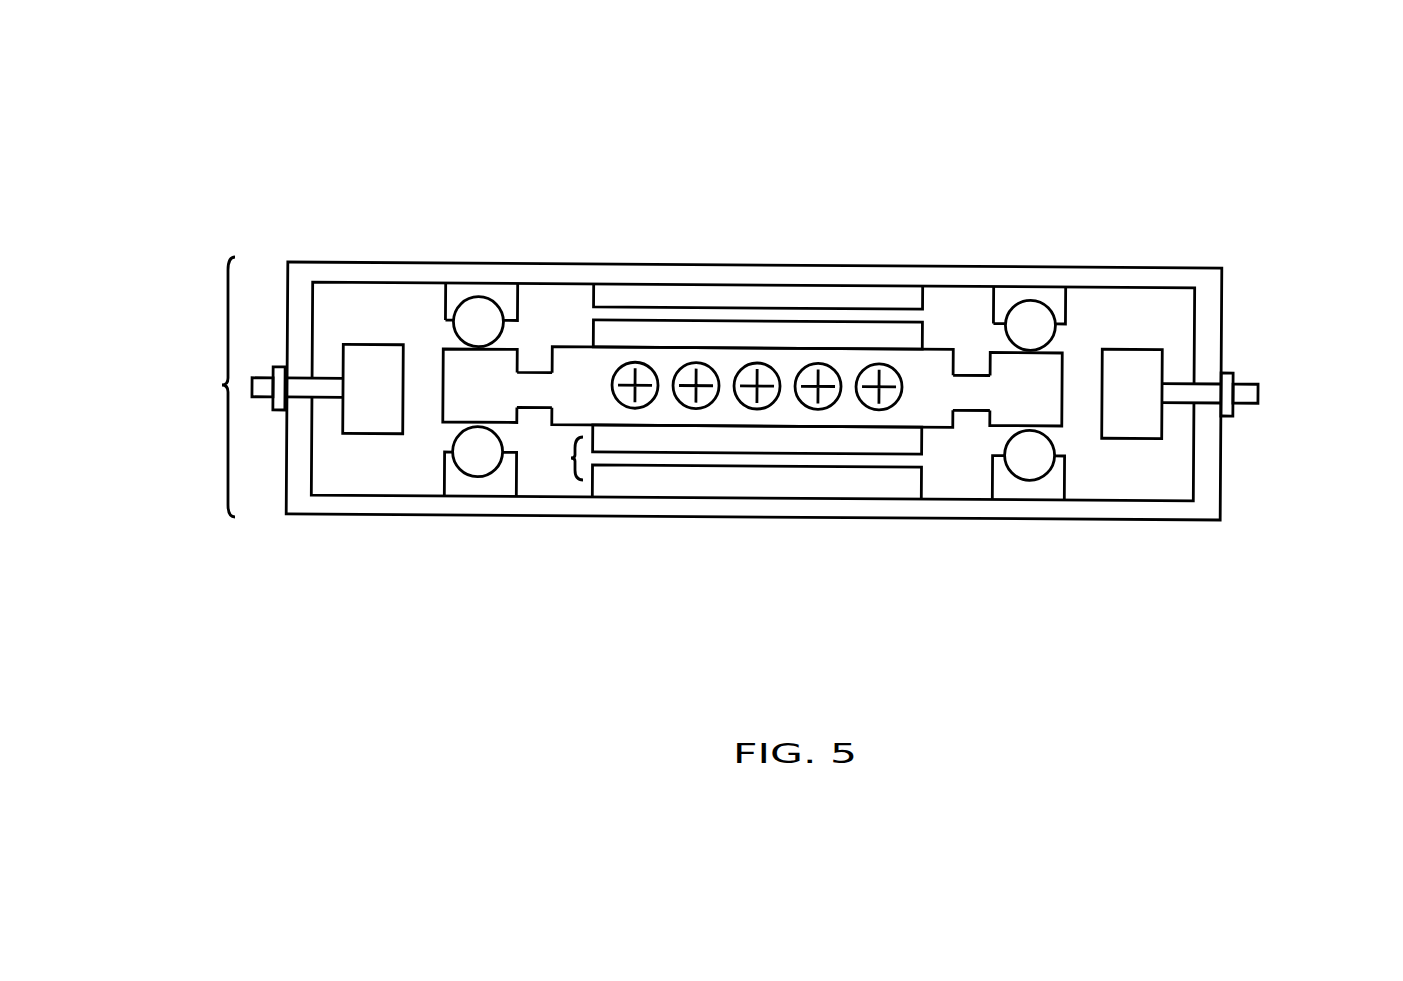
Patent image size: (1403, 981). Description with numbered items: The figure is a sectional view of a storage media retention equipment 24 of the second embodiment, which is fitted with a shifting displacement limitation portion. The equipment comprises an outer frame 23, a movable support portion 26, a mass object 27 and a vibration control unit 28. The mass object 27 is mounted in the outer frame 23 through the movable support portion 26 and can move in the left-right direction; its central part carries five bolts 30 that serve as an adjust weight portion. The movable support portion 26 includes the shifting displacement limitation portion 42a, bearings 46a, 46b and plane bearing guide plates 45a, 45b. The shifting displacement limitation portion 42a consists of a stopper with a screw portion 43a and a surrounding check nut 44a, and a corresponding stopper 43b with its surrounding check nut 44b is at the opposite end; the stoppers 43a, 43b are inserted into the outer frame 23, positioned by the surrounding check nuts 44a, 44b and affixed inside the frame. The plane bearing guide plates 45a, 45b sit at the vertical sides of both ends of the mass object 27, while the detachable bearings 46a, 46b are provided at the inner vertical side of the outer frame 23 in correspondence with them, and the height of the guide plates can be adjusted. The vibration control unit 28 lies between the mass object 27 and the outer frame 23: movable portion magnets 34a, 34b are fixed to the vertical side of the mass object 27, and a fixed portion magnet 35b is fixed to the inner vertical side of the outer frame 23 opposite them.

The outer frame 23 is at (888, 275).
The storage media retention equipment 24 is at (748, 197).
The movable support portion 26 is at (516, 332).
The mass object 27 is at (787, 347).
The vibration control unit 28 is at (556, 466).
The bolts 30 is at (900, 392).
The movable portion magnet 34a is at (683, 328).
The movable portion magnet 34b is at (750, 440).
The fixed portion magnet 35b is at (673, 527).
The shifting displacement limitation portion 42a is at (223, 385).
The stopper with screw portion 43a is at (375, 367).
The stopper with screw portion 43b is at (1146, 347).
The surrounding check nut 44a is at (277, 414).
The surrounding check nut 44b is at (1227, 418).
The plane bearing guide plate 45a is at (450, 350).
The plane bearing guide plate 45b is at (1065, 348).
The bearing 46a is at (478, 322).
The bearing 46b is at (1030, 323).